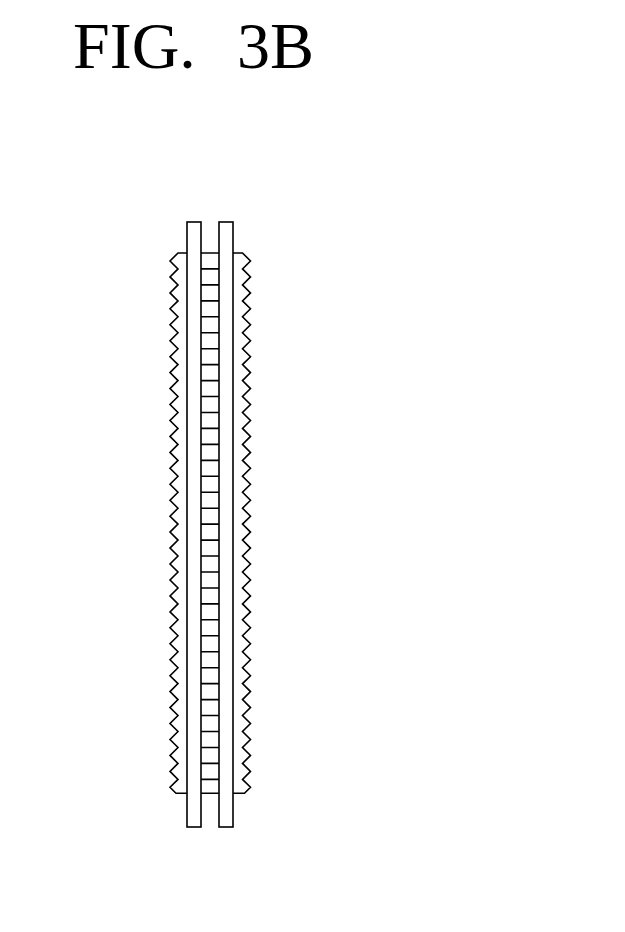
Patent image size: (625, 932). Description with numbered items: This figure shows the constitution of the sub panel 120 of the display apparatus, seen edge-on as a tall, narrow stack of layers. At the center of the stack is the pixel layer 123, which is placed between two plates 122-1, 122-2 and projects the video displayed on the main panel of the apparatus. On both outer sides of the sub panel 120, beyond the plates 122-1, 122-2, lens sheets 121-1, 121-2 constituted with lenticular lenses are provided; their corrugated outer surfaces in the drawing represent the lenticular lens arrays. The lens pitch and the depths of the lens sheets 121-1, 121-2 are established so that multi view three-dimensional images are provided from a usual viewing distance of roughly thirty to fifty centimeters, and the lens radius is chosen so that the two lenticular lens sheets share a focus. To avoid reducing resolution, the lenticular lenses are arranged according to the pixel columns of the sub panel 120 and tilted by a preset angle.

The sub panel 120 is at (247, 217).
The lens sheet 121-1 is at (178, 794).
The lens sheet 121-2 is at (242, 794).
The plate 122-1 is at (187, 829).
The plate 122-2 is at (233, 829).
The pixel layer 123 is at (208, 797).